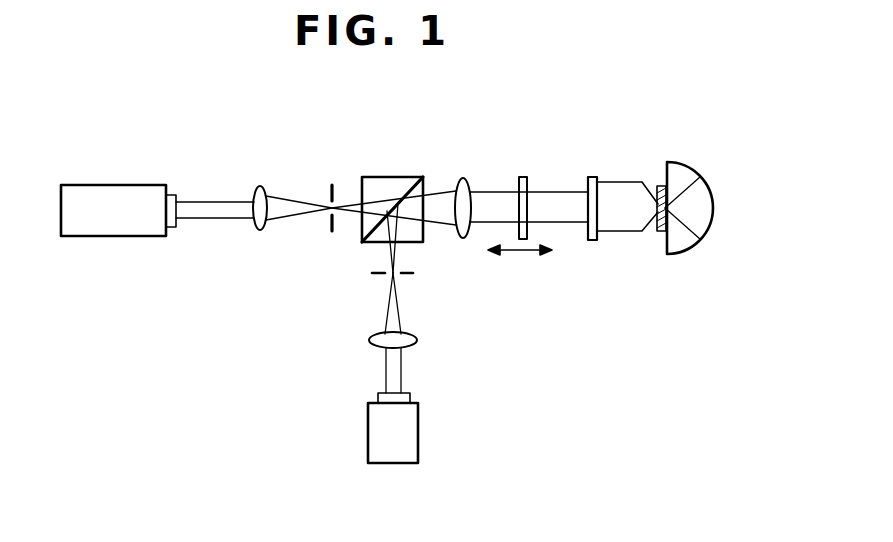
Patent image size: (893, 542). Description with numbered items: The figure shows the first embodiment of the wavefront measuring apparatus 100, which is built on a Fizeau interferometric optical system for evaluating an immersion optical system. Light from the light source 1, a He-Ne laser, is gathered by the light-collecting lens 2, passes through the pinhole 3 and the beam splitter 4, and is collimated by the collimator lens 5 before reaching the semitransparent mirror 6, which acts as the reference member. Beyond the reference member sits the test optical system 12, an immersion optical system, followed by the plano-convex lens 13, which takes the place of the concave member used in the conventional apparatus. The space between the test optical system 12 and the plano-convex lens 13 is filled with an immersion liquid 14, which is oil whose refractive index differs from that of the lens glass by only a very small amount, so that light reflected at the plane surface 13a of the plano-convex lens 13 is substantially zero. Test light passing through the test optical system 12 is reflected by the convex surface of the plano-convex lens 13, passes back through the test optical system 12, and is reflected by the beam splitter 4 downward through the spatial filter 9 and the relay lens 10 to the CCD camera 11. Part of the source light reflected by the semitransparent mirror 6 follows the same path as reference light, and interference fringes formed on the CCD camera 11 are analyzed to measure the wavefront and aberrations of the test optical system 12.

The light source 1 is at (125, 193).
The light-collecting lens 2 is at (260, 188).
The pinhole 3 is at (334, 183).
The beam splitter 4 is at (390, 177).
The collimator lens 5 is at (462, 178).
The semitransparent mirror 6 is at (523, 177).
The spatial filter 9 is at (413, 273).
The relay lens 10 is at (418, 340).
The CCD camera 11 is at (410, 432).
The test optical system 12 is at (620, 188).
The plano-convex lens 13 is at (703, 213).
The plane surface 13a is at (665, 253).
The immersion liquid 14 is at (660, 185).
The wavefront measuring apparatus 100 is at (322, 276).